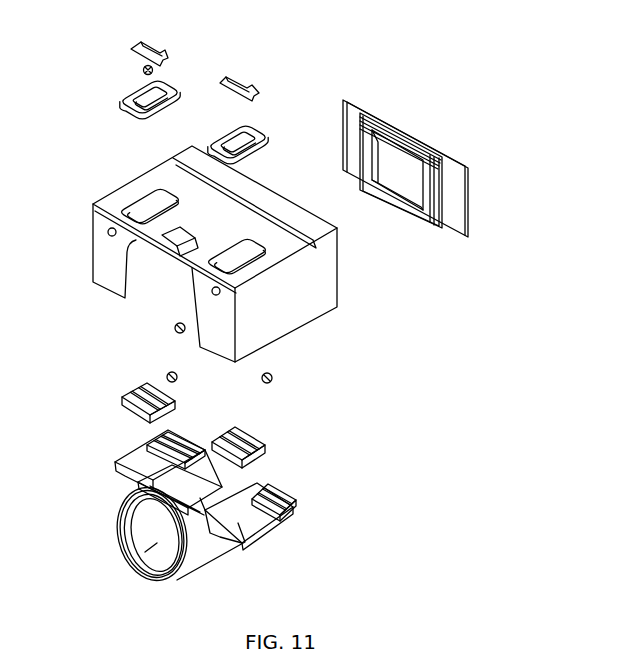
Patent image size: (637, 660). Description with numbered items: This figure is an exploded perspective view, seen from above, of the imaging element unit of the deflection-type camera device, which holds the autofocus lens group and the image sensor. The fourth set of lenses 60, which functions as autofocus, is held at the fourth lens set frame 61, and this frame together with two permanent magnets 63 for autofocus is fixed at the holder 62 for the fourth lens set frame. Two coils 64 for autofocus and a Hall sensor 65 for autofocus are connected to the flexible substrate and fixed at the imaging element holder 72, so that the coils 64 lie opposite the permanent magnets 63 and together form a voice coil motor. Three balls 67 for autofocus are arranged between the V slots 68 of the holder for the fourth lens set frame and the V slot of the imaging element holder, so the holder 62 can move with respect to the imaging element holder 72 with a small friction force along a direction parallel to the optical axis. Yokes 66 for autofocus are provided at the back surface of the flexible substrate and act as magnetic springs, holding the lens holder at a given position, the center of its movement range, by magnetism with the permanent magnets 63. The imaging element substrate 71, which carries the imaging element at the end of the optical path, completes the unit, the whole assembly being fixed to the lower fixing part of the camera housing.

The fourth set of lenses 60 is at (135, 558).
The fourth lens set frame 61 is at (120, 523).
The holder for the fourth lens set frame 62 is at (195, 552).
The permanent magnet for autofocus of the fourth set of lenses 63 is at (250, 432).
The coil for autofocus of the fourth set of lenses 64 is at (210, 142).
The Hall sensor for autofocus of the fourth set of lenses 65 is at (143, 68).
The yoke for autofocus of the fourth set of lenses 66 is at (233, 77).
The ball for autofocus of the fourth set of lenses 67 is at (262, 378).
The V slot of the holder for the fourth lens set frame 68 is at (118, 460).
The imaging element substrate 71 is at (447, 183).
The imaging element holder 72 is at (288, 308).